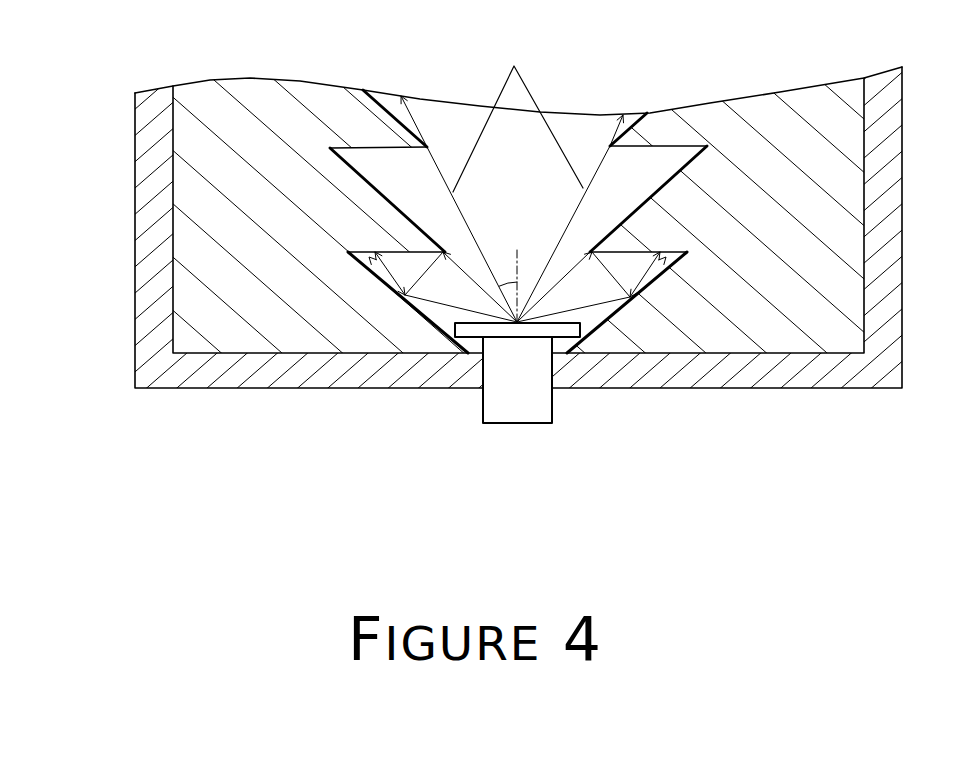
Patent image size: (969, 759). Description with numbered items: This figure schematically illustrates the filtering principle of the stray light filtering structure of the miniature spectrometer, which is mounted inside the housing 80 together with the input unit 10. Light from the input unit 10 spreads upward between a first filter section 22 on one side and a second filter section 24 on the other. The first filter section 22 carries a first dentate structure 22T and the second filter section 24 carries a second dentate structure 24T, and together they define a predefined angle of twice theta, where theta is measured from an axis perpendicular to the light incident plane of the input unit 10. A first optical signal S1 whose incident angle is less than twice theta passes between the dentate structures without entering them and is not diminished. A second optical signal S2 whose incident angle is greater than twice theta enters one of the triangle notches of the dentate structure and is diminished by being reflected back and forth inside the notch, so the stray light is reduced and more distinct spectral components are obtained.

The input unit 10 is at (515, 413).
The first filter section 22 is at (267, 97).
The first dentate structure 22T is at (427, 146).
The second filter section 24 is at (767, 117).
The second dentate structure 24T is at (607, 143).
The housing 80 is at (157, 263).
The first optical signal S1 is at (517, 175).
The second optical signal S2 is at (460, 285).